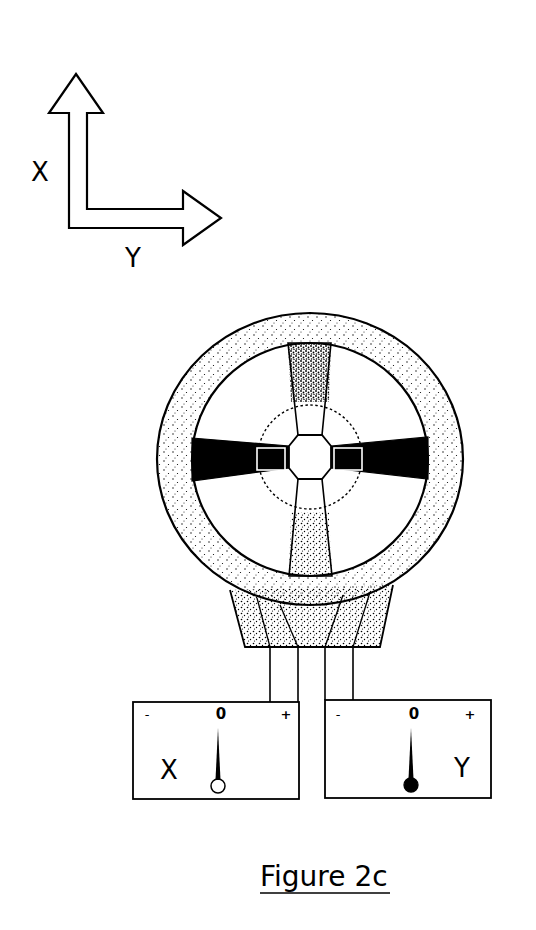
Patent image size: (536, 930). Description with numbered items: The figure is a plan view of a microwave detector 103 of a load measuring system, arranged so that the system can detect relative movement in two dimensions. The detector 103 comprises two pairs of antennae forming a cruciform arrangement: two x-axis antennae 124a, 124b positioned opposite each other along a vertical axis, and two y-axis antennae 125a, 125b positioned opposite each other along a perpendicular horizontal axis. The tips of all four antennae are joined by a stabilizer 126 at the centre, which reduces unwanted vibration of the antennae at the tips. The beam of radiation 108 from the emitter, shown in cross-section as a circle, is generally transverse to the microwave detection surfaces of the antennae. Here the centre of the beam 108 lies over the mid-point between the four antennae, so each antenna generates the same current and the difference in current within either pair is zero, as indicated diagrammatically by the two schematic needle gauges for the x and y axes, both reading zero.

The detector 103 is at (218, 360).
The beam of radiation 108 is at (338, 483).
The top x-axis antenna 124a is at (315, 350).
The bottom x-axis antenna 124b is at (305, 543).
The left-hand y-axis antenna 125a is at (188, 455).
The right-hand y-axis antenna 125b is at (427, 440).
The stabilizer 126 is at (310, 453).